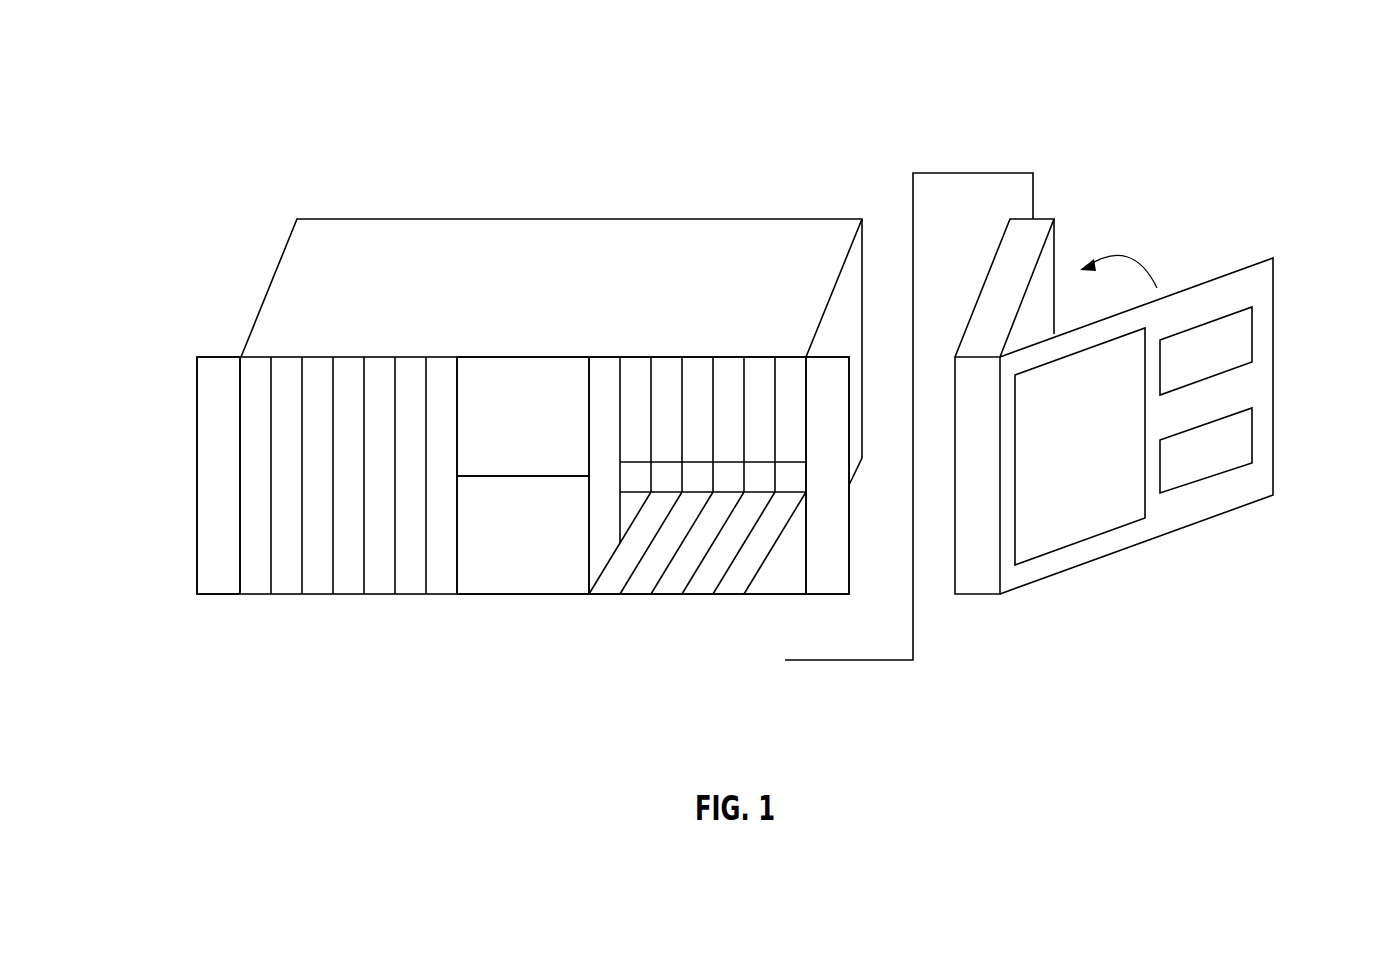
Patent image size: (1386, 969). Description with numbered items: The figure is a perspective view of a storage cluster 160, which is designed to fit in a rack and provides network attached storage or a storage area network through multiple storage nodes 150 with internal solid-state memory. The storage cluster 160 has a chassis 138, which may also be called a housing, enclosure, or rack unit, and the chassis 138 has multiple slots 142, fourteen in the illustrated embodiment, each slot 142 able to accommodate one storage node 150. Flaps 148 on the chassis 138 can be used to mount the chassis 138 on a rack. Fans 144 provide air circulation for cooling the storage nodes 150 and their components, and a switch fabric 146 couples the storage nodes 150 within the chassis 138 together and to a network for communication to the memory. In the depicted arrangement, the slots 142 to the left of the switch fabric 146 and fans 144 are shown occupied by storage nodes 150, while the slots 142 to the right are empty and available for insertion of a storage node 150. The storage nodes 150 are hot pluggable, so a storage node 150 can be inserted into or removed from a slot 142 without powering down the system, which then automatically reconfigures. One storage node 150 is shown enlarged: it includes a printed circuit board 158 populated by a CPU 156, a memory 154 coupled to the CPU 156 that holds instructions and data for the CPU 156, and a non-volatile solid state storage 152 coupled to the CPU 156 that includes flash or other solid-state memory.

The storage cluster 160 is at (212, 108).
The chassis 138 is at (370, 217).
The slots 142 is at (785, 606).
The fans 144 is at (522, 595).
The switch fabric 146 is at (528, 355).
The flaps 148 is at (197, 477).
The storage node 150 is at (252, 595).
The non-volatile solid state storage 152 is at (1078, 543).
The memory 154 is at (1205, 322).
The CPU 156 is at (1252, 435).
The printed circuit board 158 is at (1275, 283).